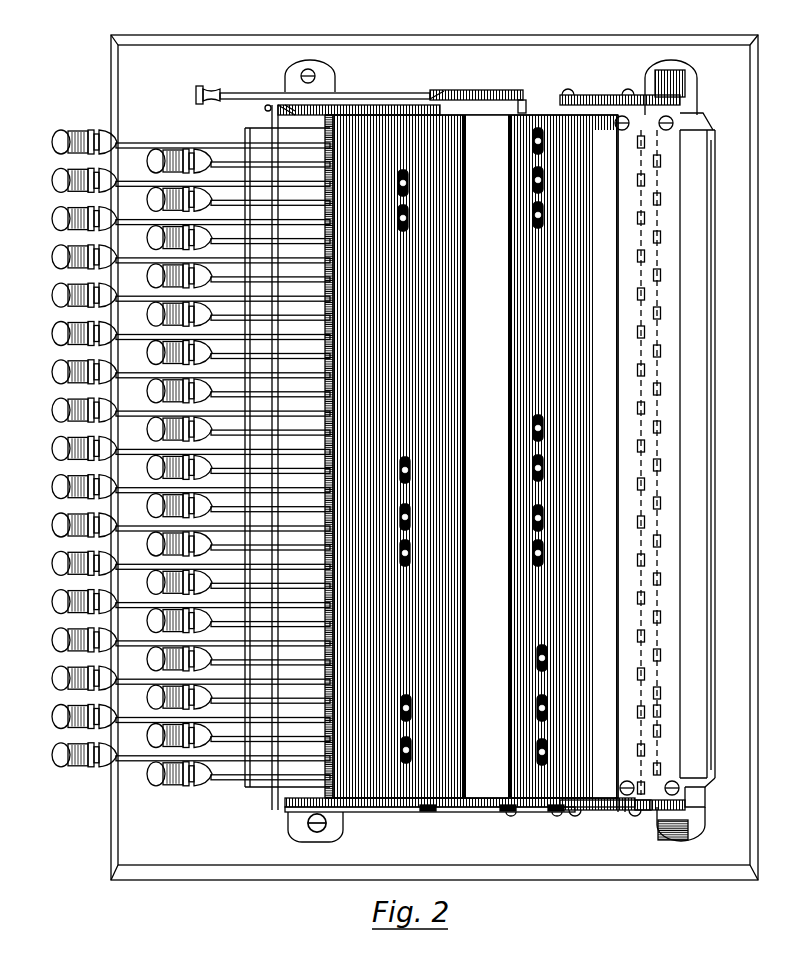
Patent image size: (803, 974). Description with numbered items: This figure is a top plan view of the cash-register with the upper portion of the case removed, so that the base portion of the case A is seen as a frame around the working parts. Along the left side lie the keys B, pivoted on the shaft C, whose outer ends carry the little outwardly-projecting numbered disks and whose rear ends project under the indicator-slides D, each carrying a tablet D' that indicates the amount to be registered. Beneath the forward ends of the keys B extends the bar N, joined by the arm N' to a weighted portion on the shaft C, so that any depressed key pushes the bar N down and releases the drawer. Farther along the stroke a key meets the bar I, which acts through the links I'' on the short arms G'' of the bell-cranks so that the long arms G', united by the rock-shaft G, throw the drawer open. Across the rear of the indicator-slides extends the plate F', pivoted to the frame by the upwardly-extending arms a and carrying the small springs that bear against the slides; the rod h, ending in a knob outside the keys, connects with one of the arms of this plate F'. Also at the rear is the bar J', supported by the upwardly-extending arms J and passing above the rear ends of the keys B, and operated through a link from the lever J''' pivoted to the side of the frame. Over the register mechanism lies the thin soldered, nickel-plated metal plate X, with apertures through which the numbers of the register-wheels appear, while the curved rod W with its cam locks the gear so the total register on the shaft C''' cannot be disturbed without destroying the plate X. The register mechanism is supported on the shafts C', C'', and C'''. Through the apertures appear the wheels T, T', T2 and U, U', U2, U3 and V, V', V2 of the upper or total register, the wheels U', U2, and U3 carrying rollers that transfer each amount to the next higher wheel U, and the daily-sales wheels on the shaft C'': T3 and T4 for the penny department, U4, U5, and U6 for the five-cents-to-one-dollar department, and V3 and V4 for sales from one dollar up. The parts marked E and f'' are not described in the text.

The base portion of the case A is at (434, 457).
The keys B is at (150, 640).
The bar N is at (255, 457).
The arm N' is at (300, 827).
The rod h is at (313, 86).
The curved rod W is at (462, 90).
The links I'' is at (481, 454).
The short arms of the bell-cranks G'' is at (653, 455).
The arm of bell-crank lever G' is at (683, 461).
The rock-shaft G is at (702, 813).
The upwardly-extending arms J is at (700, 453).
The upwardly-extending arms a is at (697, 454).
The plate F' is at (717, 454).
The bar J' is at (723, 455).
The thin metal plate X is at (471, 456).
The shaft C is at (460, 816).
The lever J''' is at (430, 819).
The shaft C'' is at (428, 819).
The shaft C' is at (506, 818).
The shaft C''' is at (560, 819).
The pin f'' is at (621, 823).
The bar I is at (643, 795).
The stop T is at (550, 141).
The stop T' is at (552, 180).
The stop T2 is at (541, 217).
The wheel T3 is at (406, 184).
The wheel T4 is at (406, 218).
The wheel U is at (551, 428).
The gear-wheel U' is at (553, 468).
The gear-wheel U2 is at (541, 520).
The gear-wheel U3 is at (541, 555).
The wheel U4 is at (408, 471).
The wheel U5 is at (408, 518).
The wheel U6 is at (408, 554).
The stop V is at (555, 658).
The stop V' is at (556, 708).
The stop V2 is at (545, 754).
The wheel V3 is at (409, 709).
The wheel V4 is at (409, 751).
The rod E is at (657, 462).
The indicator-slides D is at (658, 465).
The tablet D' is at (668, 710).